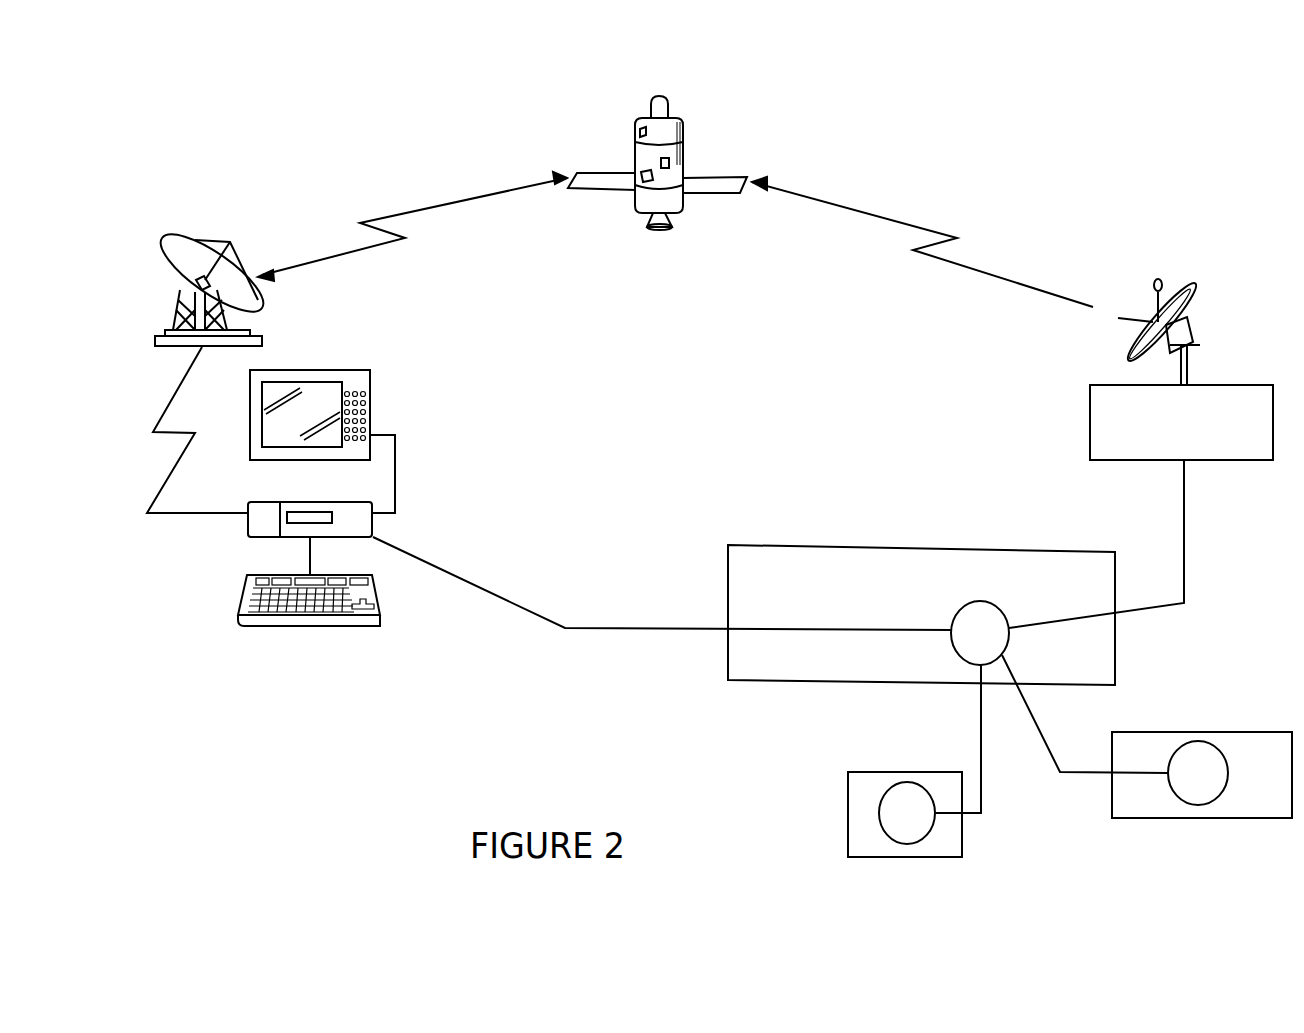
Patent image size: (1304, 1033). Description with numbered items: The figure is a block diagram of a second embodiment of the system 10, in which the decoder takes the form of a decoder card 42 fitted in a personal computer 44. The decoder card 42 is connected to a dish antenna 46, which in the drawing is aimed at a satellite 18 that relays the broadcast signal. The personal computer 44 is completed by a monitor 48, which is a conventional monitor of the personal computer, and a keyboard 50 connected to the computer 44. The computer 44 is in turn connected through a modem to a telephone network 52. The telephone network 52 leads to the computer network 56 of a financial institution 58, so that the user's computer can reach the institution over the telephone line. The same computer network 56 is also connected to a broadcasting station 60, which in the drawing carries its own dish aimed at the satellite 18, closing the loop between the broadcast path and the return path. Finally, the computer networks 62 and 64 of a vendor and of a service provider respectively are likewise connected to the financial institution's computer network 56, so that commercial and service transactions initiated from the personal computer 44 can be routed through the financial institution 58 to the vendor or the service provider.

The transaction system 10 is at (838, 170).
The satellite 18 is at (640, 208).
The decoder card 42 is at (248, 522).
The personal computer 44 is at (360, 527).
The dish antenna 46 is at (178, 247).
The monitor 48 is at (328, 397).
The keyboard 50 is at (350, 617).
The telephone network 52 is at (484, 578).
The computer network 56 is at (995, 645).
The financial institution 58 is at (1128, 576).
The broadcasting station 60 is at (1090, 432).
The computer network of a vendor 62 is at (921, 826).
The computer network of a service provider 64 is at (1228, 776).